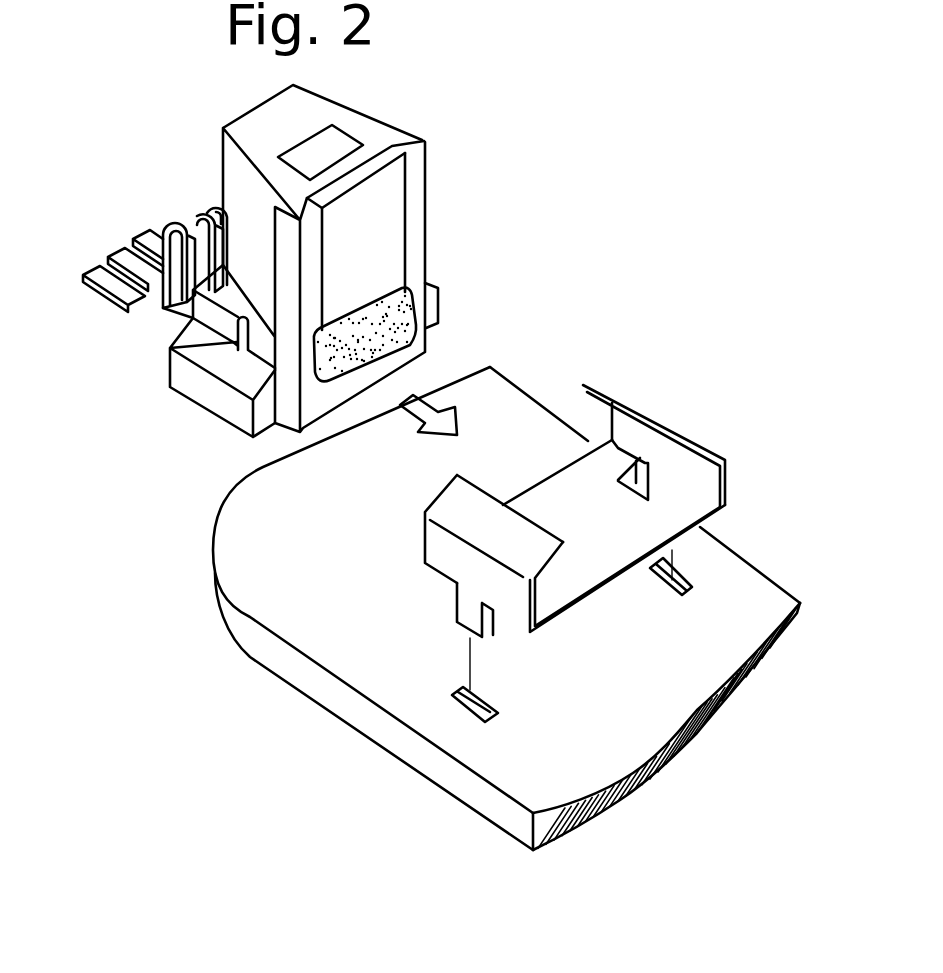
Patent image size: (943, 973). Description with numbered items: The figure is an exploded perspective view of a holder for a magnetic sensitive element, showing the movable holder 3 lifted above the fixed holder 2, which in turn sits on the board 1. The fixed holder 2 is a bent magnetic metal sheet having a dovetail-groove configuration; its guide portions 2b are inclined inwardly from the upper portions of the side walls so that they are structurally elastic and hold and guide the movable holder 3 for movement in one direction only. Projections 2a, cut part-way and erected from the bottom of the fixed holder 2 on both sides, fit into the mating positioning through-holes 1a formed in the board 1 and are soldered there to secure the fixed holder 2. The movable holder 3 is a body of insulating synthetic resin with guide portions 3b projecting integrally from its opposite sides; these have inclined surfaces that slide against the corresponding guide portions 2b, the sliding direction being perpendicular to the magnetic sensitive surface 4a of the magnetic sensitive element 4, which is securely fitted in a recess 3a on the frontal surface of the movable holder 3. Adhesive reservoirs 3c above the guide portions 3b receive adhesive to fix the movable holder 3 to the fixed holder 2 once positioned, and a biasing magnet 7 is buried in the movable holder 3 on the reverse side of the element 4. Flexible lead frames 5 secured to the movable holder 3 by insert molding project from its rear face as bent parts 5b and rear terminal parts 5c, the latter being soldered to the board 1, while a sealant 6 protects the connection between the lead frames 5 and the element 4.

The board 1 is at (778, 606).
The positioning through-holes 1a is at (696, 581).
The fixed holder 2 is at (602, 575).
The projections 2a is at (655, 473).
The guide portions 2b is at (684, 438).
The movable holder 3 is at (360, 122).
The recess 3a is at (393, 151).
The guide portions 3b is at (436, 308).
The adhesive reservoirs 3c is at (173, 348).
The magnetic sensitive element 4 is at (385, 265).
The magnetic sensitive surface 4a is at (385, 216).
The lead frames 5 is at (147, 310).
The bent parts 5b is at (213, 206).
The rear terminal parts 5c is at (155, 236).
The sealant 6 is at (413, 342).
The biasing magnet 7 is at (325, 135).